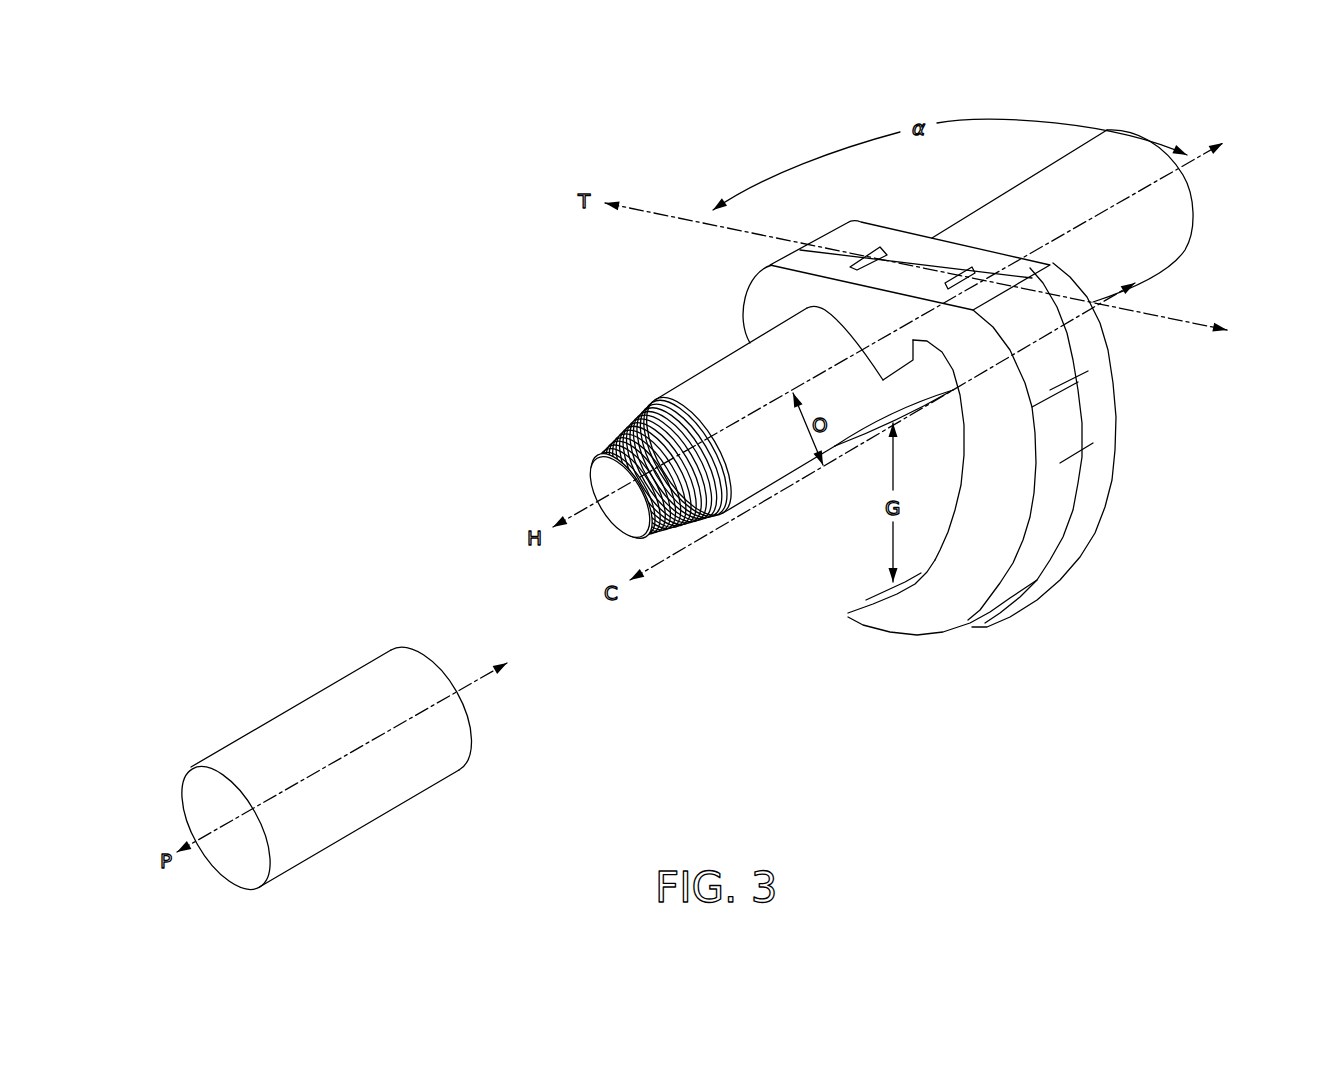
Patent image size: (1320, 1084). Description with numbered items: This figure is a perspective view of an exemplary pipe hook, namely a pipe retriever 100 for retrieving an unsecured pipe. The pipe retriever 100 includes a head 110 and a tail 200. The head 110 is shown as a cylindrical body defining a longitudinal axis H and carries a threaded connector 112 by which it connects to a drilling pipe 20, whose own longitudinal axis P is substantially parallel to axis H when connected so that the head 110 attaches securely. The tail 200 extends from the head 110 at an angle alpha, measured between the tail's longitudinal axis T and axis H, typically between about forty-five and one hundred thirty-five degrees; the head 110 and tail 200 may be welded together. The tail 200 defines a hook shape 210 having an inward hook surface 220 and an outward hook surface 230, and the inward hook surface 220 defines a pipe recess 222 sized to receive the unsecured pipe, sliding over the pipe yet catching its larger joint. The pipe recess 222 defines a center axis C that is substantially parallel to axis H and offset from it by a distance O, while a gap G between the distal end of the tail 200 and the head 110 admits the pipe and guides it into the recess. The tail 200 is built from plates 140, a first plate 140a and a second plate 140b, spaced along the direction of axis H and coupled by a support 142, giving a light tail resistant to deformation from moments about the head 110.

The drilling pipe 20 is at (328, 690).
The pipe retriever 100 is at (597, 352).
The head 110 is at (723, 352).
The threaded connector 112 is at (608, 406).
The plates 140 is at (1028, 472).
The first plate 140a is at (927, 620).
The second plate 140b is at (1105, 428).
The support 142 is at (1078, 413).
The tail 200 is at (746, 275).
The hook shape 210 is at (980, 559).
The inward hook surface 220 is at (900, 592).
The pipe recess 222 is at (950, 405).
The outward hook surface 230 is at (1072, 528).